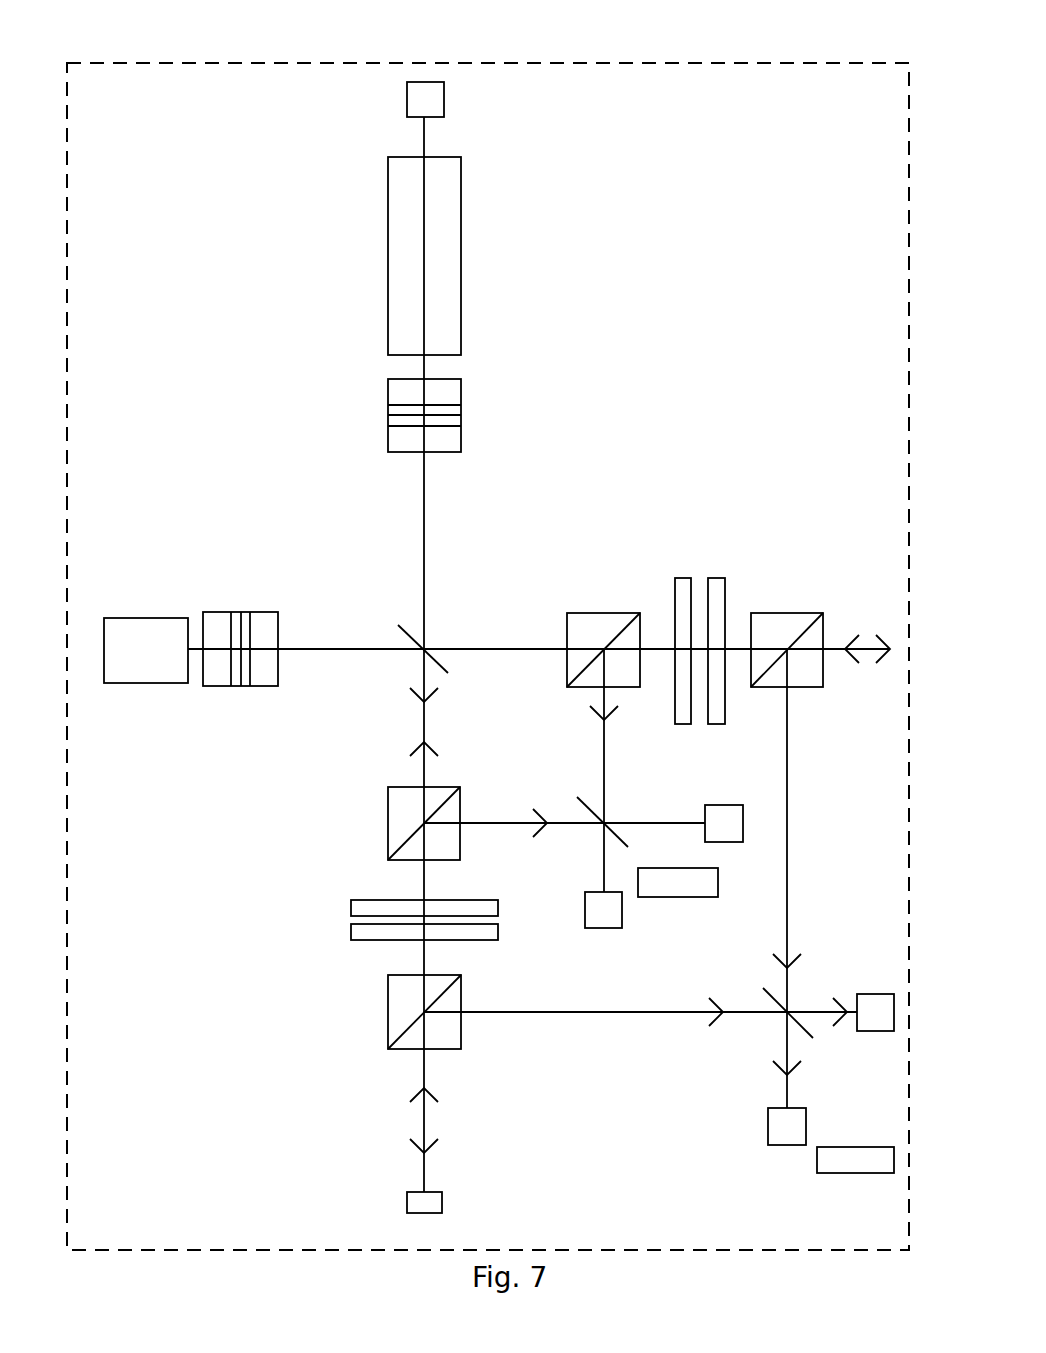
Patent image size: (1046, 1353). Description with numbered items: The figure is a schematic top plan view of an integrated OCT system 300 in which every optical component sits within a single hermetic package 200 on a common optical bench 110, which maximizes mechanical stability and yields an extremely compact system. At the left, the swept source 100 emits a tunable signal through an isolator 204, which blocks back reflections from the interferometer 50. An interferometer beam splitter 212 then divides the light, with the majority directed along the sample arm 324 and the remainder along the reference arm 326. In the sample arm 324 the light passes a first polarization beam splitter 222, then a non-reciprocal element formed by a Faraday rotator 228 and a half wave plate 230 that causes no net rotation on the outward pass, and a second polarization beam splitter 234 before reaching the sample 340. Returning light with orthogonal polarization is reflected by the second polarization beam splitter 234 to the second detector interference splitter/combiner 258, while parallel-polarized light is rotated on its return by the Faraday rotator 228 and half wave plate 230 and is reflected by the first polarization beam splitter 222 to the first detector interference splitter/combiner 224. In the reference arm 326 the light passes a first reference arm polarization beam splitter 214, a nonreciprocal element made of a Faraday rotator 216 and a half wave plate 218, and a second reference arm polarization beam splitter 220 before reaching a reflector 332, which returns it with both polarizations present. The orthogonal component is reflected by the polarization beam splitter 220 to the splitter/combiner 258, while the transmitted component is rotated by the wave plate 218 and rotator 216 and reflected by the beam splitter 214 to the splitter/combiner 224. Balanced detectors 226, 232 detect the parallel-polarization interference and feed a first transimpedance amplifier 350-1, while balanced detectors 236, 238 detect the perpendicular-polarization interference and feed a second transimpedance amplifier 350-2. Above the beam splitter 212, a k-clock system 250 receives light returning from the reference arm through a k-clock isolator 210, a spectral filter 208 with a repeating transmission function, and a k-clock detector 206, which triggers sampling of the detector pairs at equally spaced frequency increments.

The integrated OCT system 300 is at (687, 58).
The hermetic package 200 is at (488, 656).
The optical bench 110 is at (488, 656).
The swept source 100 is at (148, 683).
The interferometer 50 is at (602, 400).
The isolator 204 is at (240, 612).
The k-clock detector 206 is at (407, 100).
The spectral filter 208 is at (388, 240).
The k-clock isolator 210 is at (388, 406).
The interferometer beam splitter 212 is at (398, 625).
The first reference arm polarization beam splitter 214 is at (388, 787).
The Faraday rotator 216 is at (351, 900).
The half wave plate 218 is at (351, 928).
The second reference arm polarization beam splitter 220 is at (388, 1012).
The first polarization beam splitter 222 is at (567, 613).
The first detector interference splitter/combiner 224 is at (577, 797).
The balanced detector 226 is at (595, 892).
The Faraday rotator 228 is at (676, 578).
The half wave plate 230 is at (712, 578).
The balanced detector 232 is at (722, 805).
The second polarization beam splitter 234 is at (795, 613).
The balanced detector 236 is at (875, 994).
The balanced detector 238 is at (806, 1125).
The k-clock system 250 is at (524, 217).
The second detector interference splitter/combiner 258 is at (763, 988).
The sample arm 324 is at (508, 612).
The reference arm 326 is at (399, 717).
The reflector 332 is at (407, 1207).
The sample 340 is at (946, 660).
The first transimpedance amplifier 350-1 is at (678, 882).
The second transimpedance amplifier 350-2 is at (855, 1160).